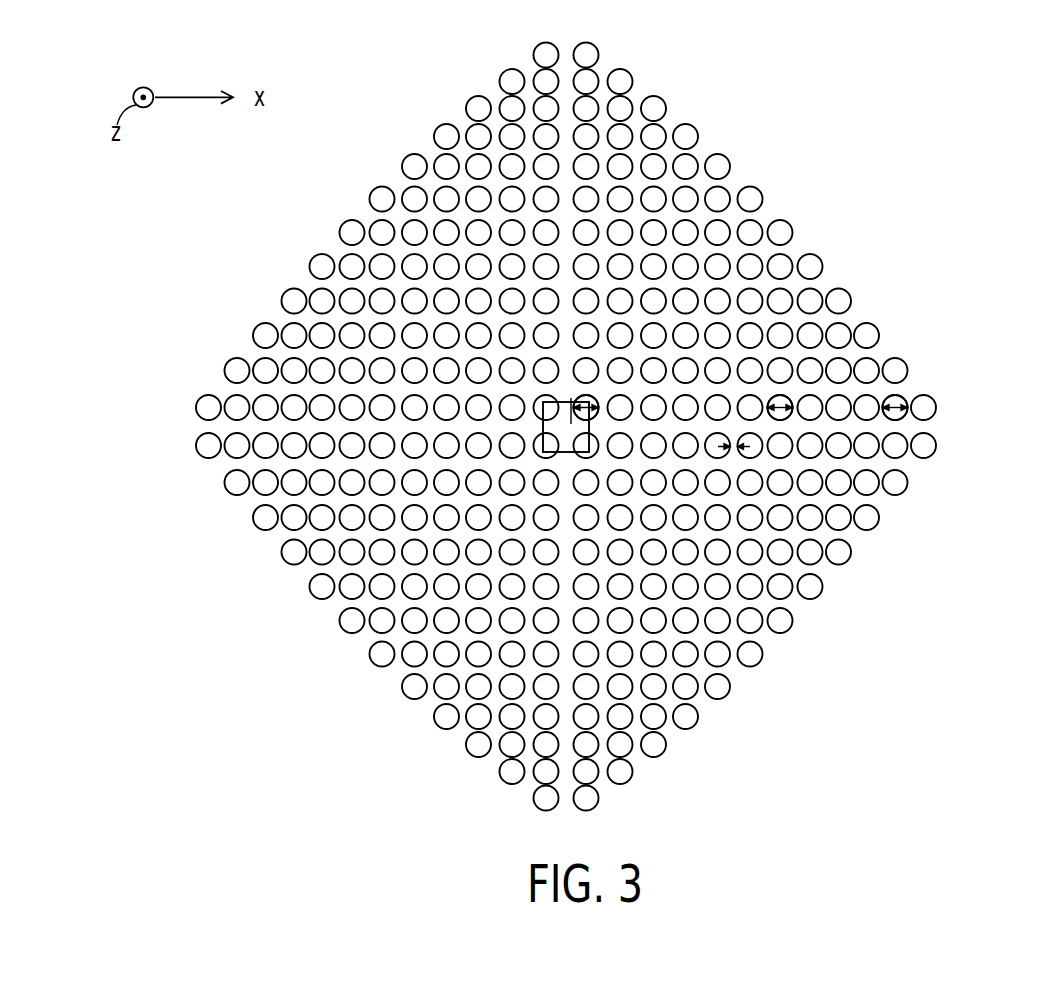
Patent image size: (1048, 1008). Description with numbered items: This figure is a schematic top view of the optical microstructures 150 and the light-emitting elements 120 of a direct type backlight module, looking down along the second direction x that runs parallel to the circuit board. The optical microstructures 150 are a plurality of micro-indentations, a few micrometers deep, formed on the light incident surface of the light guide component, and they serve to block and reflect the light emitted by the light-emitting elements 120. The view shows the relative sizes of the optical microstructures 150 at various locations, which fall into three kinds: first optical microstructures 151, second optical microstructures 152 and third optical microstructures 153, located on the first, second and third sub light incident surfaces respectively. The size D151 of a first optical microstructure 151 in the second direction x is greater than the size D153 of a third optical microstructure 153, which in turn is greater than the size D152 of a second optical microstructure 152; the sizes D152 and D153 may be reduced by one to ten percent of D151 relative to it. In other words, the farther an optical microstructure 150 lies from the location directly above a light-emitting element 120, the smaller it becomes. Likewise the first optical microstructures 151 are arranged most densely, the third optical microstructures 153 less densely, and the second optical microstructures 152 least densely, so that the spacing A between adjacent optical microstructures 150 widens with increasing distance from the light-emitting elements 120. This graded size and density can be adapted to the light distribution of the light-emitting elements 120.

The light-emitting element 120 is at (564, 427).
The optical microstructure 150 is at (569, 414).
The first optical microstructure 151 is at (594, 396).
The second optical microstructure 152 is at (900, 396).
The third optical microstructure 153 is at (787, 396).
The size of the first optical microstructure D151 is at (963, 590).
The size of the second optical microstructure D152 is at (901, 414).
The size of the third optical microstructure D153 is at (786, 414).
The spacing between adjacent optical microstructures A is at (737, 453).